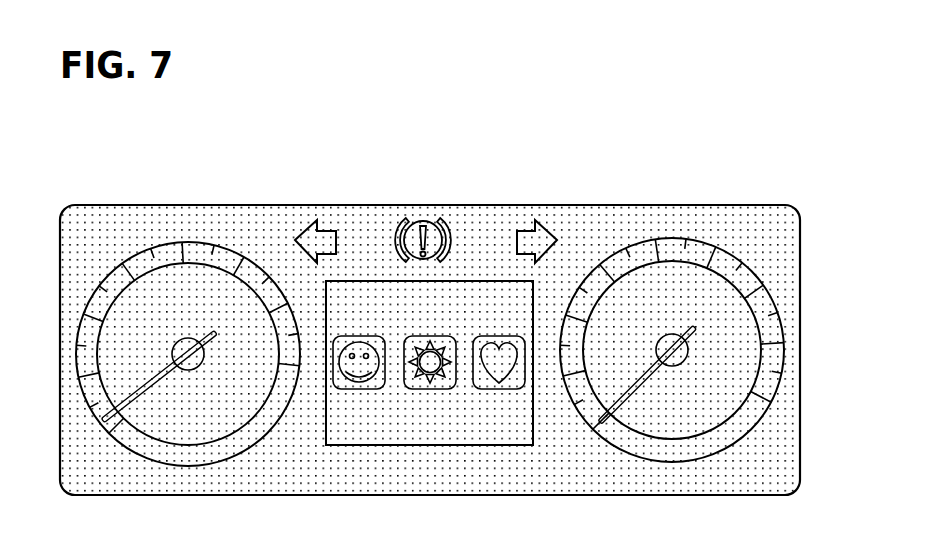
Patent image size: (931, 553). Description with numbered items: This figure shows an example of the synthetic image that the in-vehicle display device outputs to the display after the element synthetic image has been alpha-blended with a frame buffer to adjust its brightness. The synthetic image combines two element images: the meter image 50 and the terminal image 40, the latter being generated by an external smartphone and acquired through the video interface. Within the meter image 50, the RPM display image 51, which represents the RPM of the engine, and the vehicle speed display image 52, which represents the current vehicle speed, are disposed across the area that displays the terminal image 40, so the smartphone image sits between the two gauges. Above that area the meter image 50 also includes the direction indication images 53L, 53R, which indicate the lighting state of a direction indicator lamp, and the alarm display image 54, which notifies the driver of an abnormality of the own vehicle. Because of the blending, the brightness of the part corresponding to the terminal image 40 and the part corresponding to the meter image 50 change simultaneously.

The meter image 50 is at (122, 184).
The RPM display image 51 is at (200, 244).
The vehicle speed display image 52 is at (703, 239).
The direction indication image 53L is at (323, 230).
The direction indication image 53R is at (528, 230).
The alarm display image 54 is at (423, 221).
The terminal image 40 is at (457, 447).